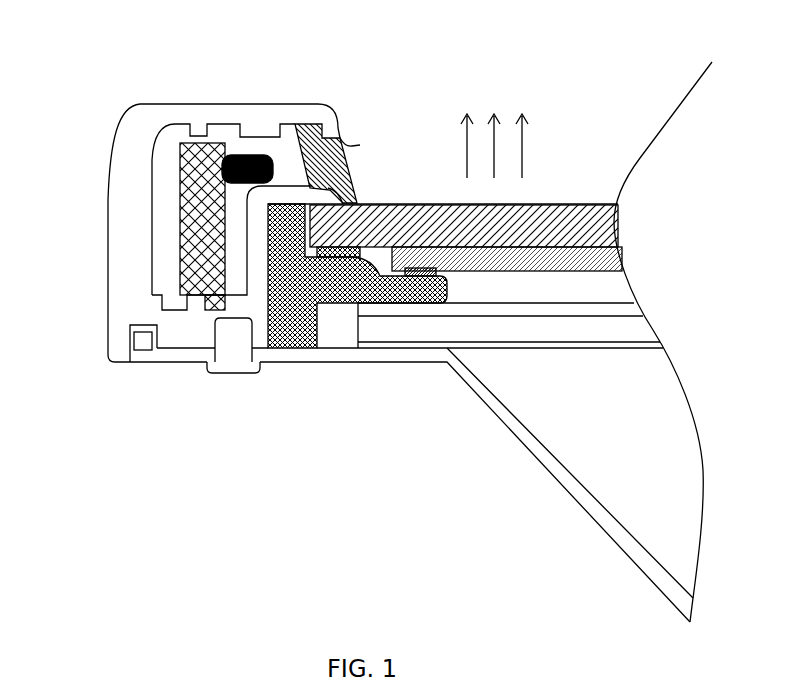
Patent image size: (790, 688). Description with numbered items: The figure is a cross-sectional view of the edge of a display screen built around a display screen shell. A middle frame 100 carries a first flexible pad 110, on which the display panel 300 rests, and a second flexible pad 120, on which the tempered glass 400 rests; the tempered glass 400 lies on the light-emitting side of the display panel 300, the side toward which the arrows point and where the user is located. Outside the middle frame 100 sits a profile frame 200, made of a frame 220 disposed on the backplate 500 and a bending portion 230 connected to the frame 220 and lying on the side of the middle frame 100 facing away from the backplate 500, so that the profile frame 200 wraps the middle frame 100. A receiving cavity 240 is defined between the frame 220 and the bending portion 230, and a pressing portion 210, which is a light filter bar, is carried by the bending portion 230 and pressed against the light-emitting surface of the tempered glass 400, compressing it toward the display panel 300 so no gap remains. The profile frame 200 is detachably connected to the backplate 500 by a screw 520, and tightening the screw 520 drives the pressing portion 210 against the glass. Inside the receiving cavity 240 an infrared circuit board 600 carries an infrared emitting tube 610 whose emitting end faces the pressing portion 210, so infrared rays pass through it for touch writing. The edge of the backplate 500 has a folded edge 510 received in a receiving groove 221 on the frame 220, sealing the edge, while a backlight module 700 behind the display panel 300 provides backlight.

The middle frame 100 is at (325, 320).
The first flexible pad 110 is at (438, 272).
The second flexible pad 120 is at (360, 255).
The profile frame 200 is at (195, 211).
The pressing portion 210 is at (360, 145).
The frame 220 is at (130, 165).
The receiving groove 221 is at (97, 366).
The bending portion 230 is at (223, 124).
The receiving cavity 240 is at (165, 208).
The display panel 300 is at (607, 263).
The tempered glass 400 is at (568, 217).
The backplate 500 is at (397, 357).
The folded edge 510 is at (134, 348).
The screw 520 is at (228, 352).
The infrared circuit board 600 is at (187, 250).
The infrared emitting tube 610 is at (250, 154).
The backlight module 700 is at (628, 332).